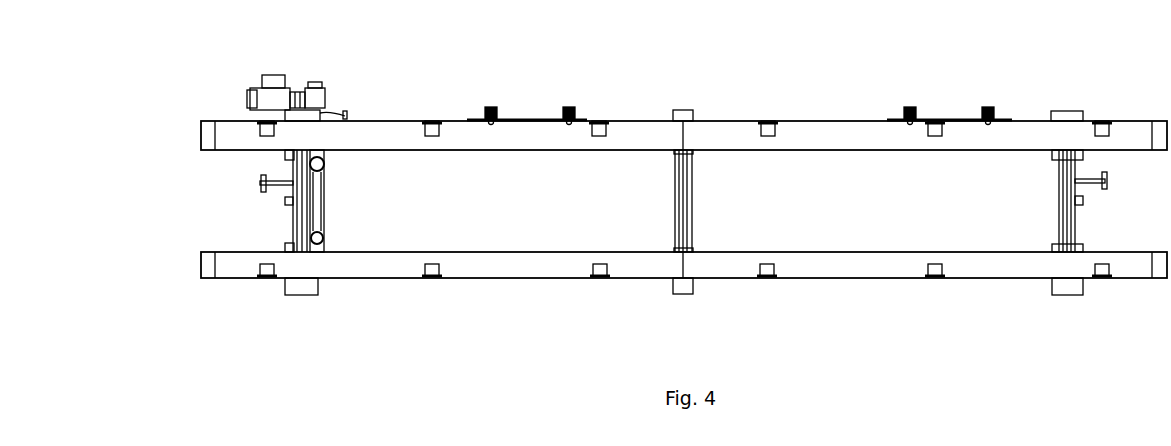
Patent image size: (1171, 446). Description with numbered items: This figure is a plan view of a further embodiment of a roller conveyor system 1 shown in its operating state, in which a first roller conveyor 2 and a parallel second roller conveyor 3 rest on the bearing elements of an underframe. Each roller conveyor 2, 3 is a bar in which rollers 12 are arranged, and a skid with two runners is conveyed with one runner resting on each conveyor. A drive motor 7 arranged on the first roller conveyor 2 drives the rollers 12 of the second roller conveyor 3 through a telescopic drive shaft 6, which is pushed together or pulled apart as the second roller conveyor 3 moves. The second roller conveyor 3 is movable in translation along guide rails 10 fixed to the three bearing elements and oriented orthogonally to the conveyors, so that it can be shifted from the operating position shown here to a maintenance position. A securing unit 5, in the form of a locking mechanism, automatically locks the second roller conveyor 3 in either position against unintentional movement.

The roller conveyor system 1 is at (660, 87).
The first roller conveyor 2 is at (818, 135).
The second roller conveyor 3 is at (845, 262).
The securing unit 5 is at (262, 182).
The drive shaft 6 is at (324, 200).
The drive motor 7 is at (250, 88).
The guide rail 10 is at (292, 212).
The roller 12 is at (432, 118).